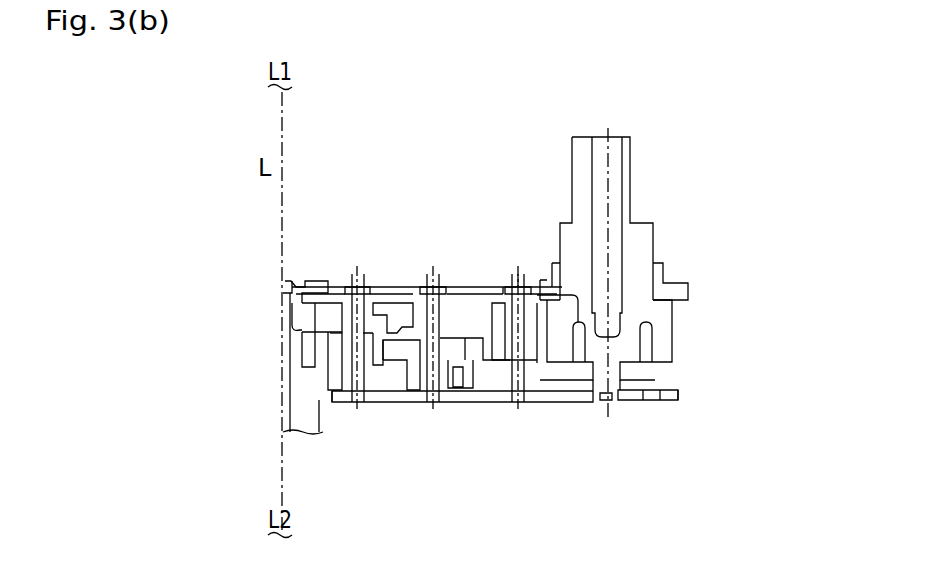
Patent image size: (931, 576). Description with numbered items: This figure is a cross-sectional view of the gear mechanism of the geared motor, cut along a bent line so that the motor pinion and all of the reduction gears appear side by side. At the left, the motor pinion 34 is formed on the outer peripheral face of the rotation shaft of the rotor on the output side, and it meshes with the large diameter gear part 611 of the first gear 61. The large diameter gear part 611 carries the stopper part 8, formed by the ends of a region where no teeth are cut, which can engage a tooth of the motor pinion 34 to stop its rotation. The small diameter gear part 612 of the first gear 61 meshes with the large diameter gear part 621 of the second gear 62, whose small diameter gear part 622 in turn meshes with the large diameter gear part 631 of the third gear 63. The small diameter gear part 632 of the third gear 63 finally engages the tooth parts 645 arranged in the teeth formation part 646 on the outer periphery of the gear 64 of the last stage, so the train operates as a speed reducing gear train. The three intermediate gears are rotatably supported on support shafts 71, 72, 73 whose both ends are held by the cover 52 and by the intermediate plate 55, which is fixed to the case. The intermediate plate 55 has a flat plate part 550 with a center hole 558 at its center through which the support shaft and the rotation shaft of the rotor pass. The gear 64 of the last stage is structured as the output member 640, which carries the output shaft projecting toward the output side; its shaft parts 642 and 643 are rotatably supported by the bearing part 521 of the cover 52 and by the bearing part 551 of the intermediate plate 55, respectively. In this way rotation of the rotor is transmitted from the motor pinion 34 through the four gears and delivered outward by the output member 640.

The stopper part 8 is at (306, 349).
The motor pinion 34 is at (292, 313).
The cover 52 is at (482, 287).
The intermediate plate 55 is at (675, 415).
The first gear 61 is at (340, 300).
The second gear 62 is at (412, 362).
The third gear 63 is at (493, 388).
The gear of the last stage 64 is at (553, 287).
The support shaft 71 is at (362, 285).
The support shaft 72 is at (452, 287).
The support shaft 73 is at (510, 402).
The bearing part 521 is at (677, 273).
The flat plate part 550 is at (566, 402).
The bearing part 551 is at (593, 385).
The center hole 558 is at (332, 396).
The large diameter gear part 611 is at (313, 300).
The small diameter gear part 612 is at (313, 360).
The large diameter gear part 621 is at (378, 402).
The small diameter gear part 622 is at (447, 402).
The large diameter gear part 631 is at (462, 402).
The small diameter gear part 632 is at (527, 287).
The output member 640 is at (650, 173).
The shaft part 642 is at (630, 283).
The shaft part 643 is at (612, 385).
The tooth part 645 is at (550, 332).
The teeth formation part 646 is at (702, 340).